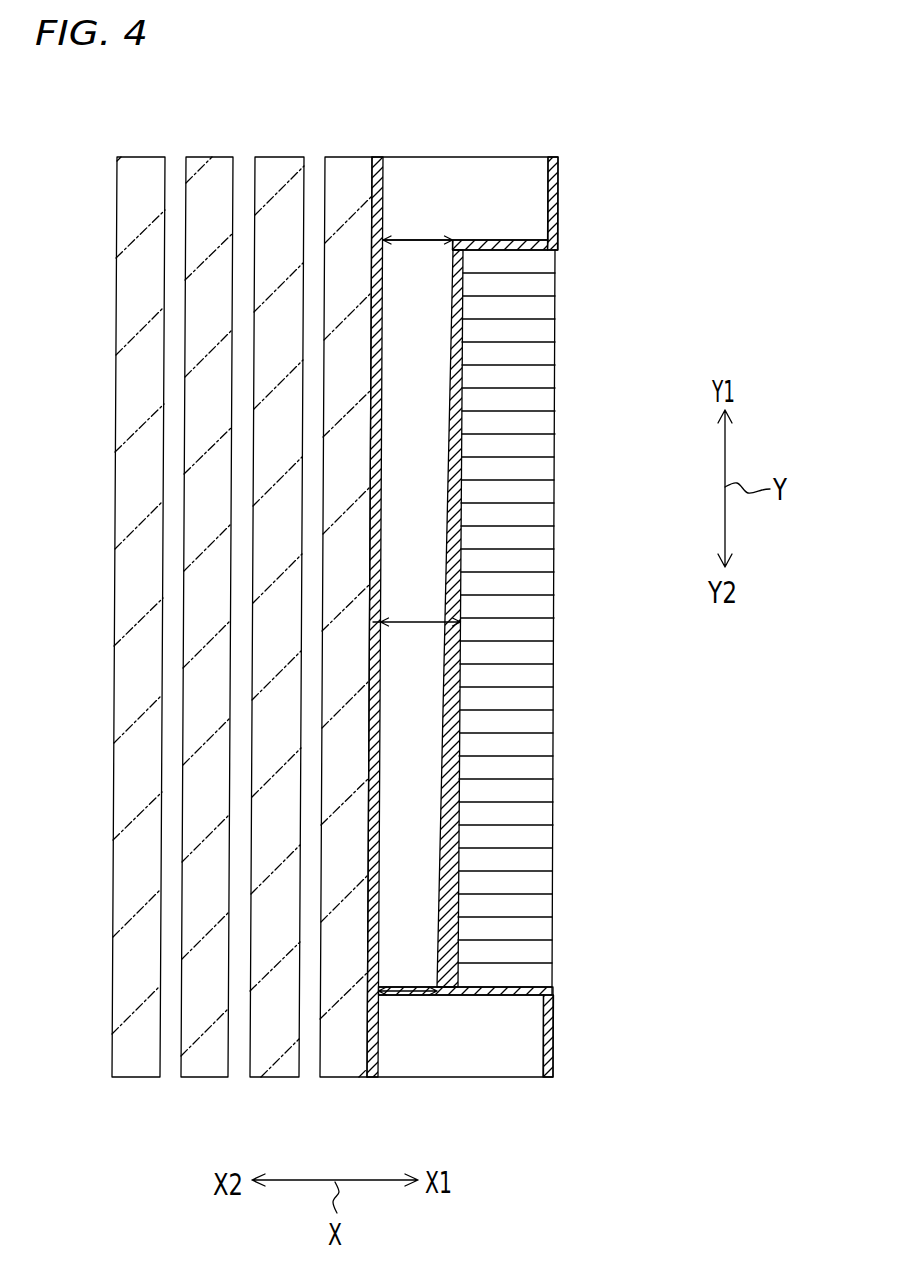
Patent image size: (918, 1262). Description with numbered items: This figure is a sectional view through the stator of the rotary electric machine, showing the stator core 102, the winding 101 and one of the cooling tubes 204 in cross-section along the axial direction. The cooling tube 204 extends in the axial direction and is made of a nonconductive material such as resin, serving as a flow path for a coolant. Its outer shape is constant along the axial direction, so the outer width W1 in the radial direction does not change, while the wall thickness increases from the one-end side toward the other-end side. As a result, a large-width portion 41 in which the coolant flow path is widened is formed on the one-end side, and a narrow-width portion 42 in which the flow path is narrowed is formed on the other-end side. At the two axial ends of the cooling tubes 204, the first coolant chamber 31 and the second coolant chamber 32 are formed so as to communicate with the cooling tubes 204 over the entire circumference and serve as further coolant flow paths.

The first coolant chamber 31 is at (477, 195).
The second coolant chamber 32 is at (505, 1040).
The large-width portion 41 is at (415, 242).
The narrow-width portion 42 is at (410, 992).
The winding 101 is at (347, 272).
The stator core 102 is at (522, 512).
The cooling tube 204 is at (413, 708).
The outer width in the radial direction W1 is at (415, 622).